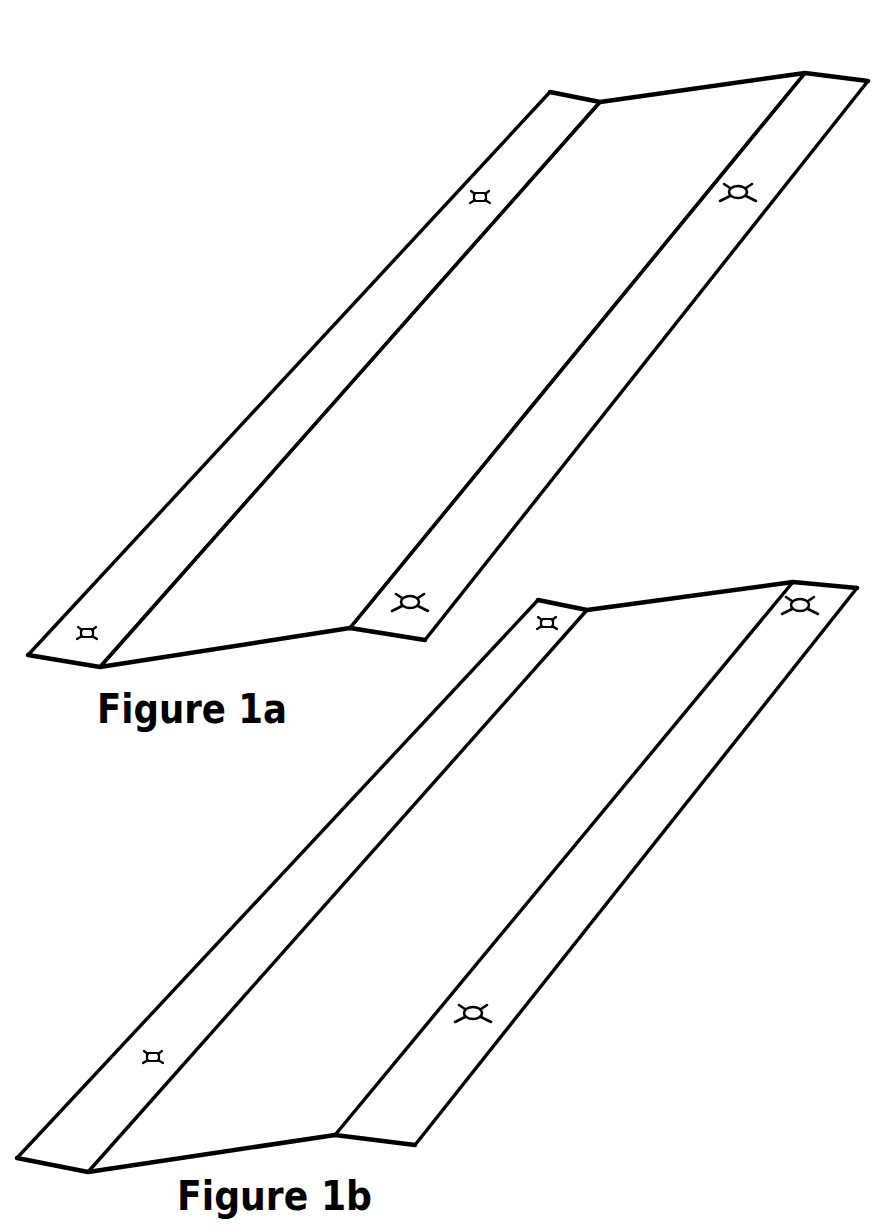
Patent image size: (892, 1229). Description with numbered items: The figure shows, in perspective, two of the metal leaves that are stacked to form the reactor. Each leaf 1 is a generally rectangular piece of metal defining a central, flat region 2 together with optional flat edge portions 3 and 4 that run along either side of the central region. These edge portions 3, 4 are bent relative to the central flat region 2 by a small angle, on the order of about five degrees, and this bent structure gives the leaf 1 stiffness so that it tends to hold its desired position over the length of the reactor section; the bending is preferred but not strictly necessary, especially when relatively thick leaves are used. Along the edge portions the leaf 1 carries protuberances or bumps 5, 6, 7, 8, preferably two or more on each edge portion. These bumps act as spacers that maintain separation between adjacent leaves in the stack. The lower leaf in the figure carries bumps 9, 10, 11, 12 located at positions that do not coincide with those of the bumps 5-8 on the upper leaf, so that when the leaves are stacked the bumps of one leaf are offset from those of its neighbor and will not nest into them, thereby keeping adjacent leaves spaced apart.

In FIG. 1A, the leaf 1 is at (441, 341).
In FIG. 1A, the central flat region 2 is at (512, 350).
In FIG. 1A, the flat edge portion 3 is at (307, 390).
In FIG. 1A, the flat edge portion 4 is at (617, 348).
In FIG. 1A, the bump 5 is at (88, 627).
In FIG. 1A, the bump 6 is at (477, 193).
In FIG. 1A, the bump 7 is at (427, 599).
In FIG. 1A, the bump 8 is at (753, 190).
In FIG. 1B, the bump 9 is at (487, 1013).
In FIG. 1B, the bump 10 is at (800, 615).
In FIG. 1B, the bump 11 is at (547, 630).
In FIG. 1B, the bump 12 is at (152, 1052).